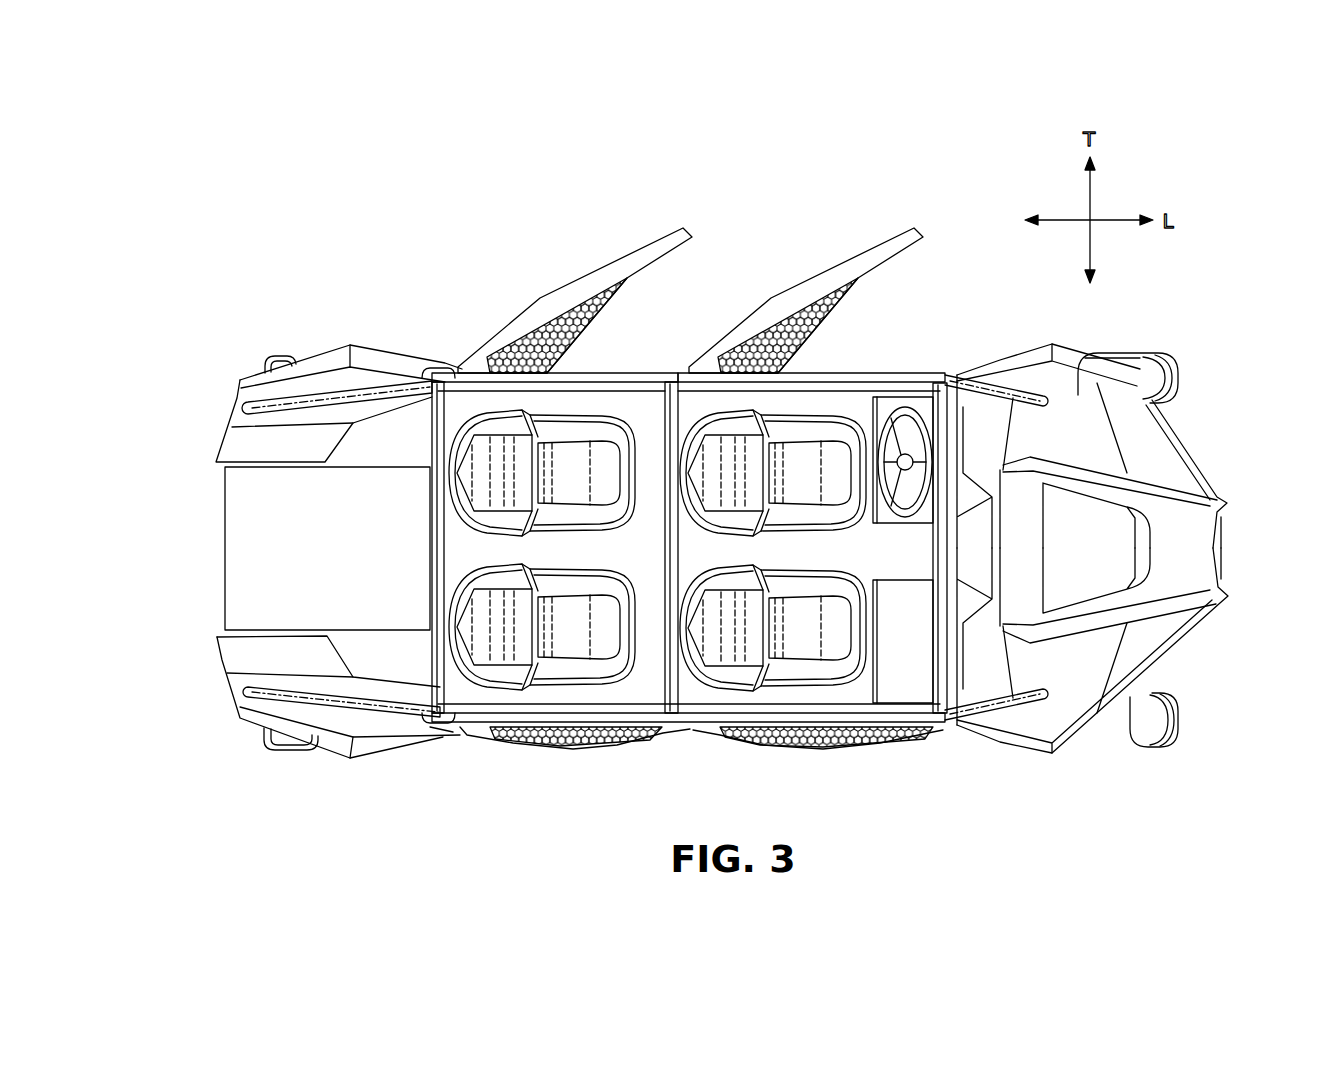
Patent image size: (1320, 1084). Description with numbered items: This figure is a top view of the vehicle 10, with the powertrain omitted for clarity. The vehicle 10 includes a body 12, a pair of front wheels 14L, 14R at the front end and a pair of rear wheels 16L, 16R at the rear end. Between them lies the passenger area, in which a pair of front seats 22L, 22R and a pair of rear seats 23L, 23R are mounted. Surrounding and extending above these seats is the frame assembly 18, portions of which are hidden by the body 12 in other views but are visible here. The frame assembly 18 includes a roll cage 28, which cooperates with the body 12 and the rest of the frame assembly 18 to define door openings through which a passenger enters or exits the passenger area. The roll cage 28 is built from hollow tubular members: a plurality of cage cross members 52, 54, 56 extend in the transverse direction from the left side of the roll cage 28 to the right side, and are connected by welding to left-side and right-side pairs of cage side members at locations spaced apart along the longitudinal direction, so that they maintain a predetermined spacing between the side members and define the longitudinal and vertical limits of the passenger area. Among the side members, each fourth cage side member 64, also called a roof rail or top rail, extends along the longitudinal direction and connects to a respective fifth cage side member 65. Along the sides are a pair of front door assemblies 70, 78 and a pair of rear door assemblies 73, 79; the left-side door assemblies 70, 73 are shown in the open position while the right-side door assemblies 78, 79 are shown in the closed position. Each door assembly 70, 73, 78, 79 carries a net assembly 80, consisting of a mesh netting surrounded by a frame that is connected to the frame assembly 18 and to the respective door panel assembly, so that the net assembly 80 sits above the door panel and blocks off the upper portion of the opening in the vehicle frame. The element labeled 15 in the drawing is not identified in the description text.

The vehicle 10 is at (312, 220).
The body 12 is at (232, 507).
The front wheel 14L is at (1150, 350).
The front wheel 14R is at (1140, 750).
The cargo bed 15 is at (237, 584).
The rear wheel 16L is at (290, 357).
The rear wheel 16R is at (290, 748).
The frame assembly 18 is at (438, 540).
The front seat 22L is at (829, 418).
The front seat 22R is at (825, 680).
The rear seat 23L is at (598, 452).
The rear seat 23R is at (600, 651).
The roll cage 28 is at (937, 723).
The cage cross member 52 is at (946, 432).
The cage cross member 54 is at (671, 682).
The cage cross member 56 is at (433, 692).
The fourth cage side member 64 is at (768, 378).
The fifth cage side member 65 is at (389, 385).
The front door assembly 70 is at (777, 295).
The rear door assembly 73 is at (513, 318).
The front door assembly 78 is at (735, 745).
The rear door assembly 79 is at (523, 748).
The net assembly 80 is at (607, 262).